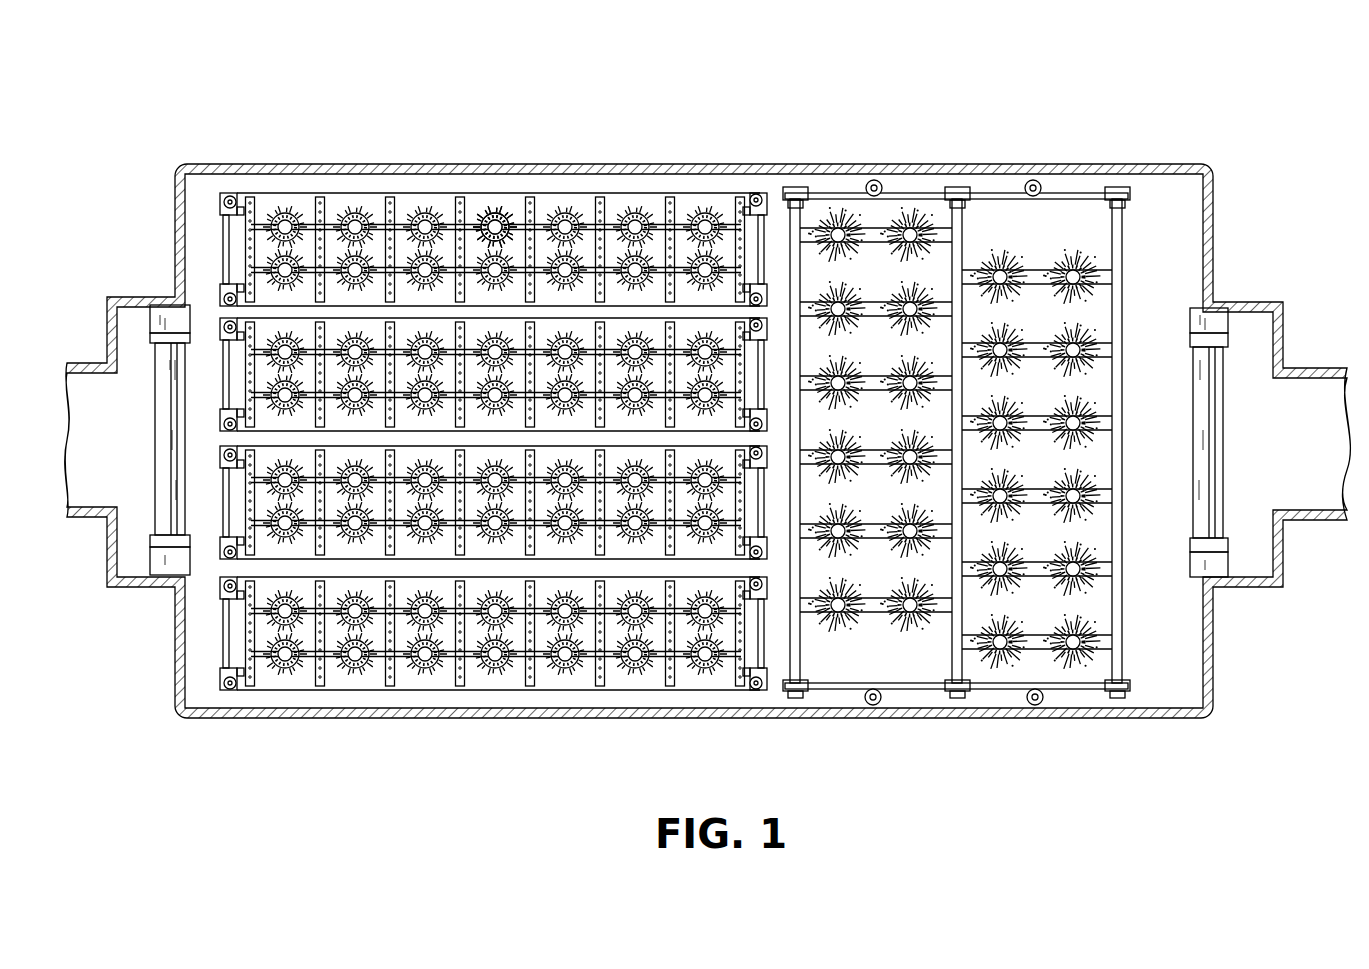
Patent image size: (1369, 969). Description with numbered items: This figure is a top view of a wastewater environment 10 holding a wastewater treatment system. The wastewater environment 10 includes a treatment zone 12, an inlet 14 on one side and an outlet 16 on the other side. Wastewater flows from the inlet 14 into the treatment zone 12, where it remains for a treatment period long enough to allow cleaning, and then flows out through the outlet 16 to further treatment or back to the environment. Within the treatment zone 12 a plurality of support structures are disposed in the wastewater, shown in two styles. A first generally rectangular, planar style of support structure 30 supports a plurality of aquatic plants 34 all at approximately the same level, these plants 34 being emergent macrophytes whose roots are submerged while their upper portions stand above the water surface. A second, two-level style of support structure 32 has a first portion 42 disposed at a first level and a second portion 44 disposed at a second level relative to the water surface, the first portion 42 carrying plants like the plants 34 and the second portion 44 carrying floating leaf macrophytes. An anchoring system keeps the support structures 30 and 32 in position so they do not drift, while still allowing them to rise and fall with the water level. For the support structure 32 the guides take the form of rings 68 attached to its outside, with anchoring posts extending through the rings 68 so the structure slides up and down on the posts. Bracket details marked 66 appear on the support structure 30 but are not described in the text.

The wastewater environment 10 is at (1203, 114).
The treatment zone 12 is at (933, 158).
The inlet 14 is at (119, 450).
The outlet 16 is at (1324, 456).
The support structure 30 is at (506, 387).
The two-level support structure 32 is at (972, 417).
The aquatic plants 34 is at (490, 199).
The first portion 42 is at (783, 232).
The second portion 44 is at (1122, 318).
The mounting bracket 66 is at (755, 192).
The rings 68 is at (1042, 182).